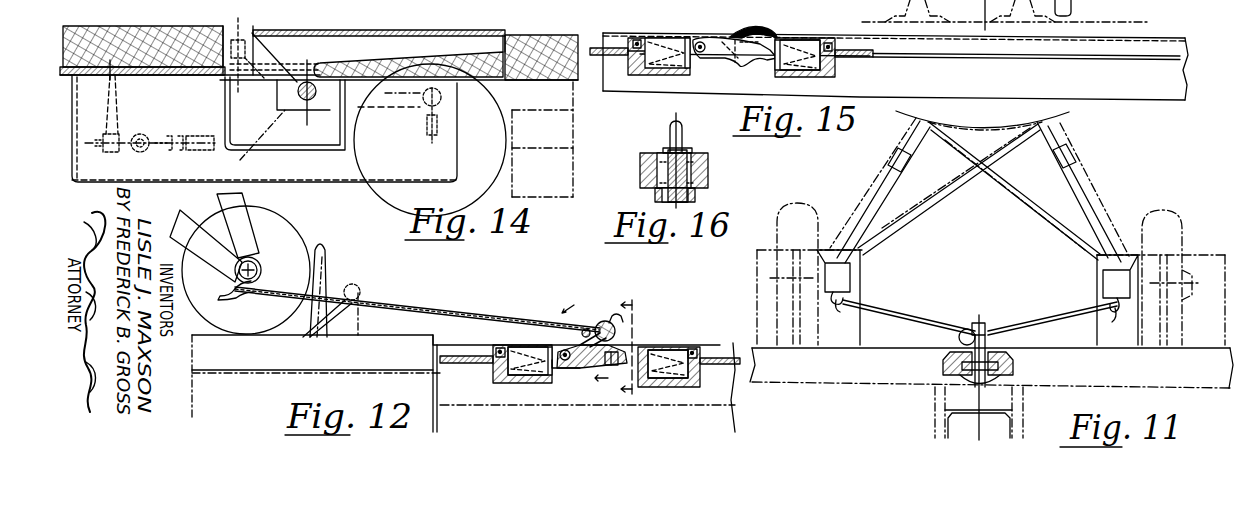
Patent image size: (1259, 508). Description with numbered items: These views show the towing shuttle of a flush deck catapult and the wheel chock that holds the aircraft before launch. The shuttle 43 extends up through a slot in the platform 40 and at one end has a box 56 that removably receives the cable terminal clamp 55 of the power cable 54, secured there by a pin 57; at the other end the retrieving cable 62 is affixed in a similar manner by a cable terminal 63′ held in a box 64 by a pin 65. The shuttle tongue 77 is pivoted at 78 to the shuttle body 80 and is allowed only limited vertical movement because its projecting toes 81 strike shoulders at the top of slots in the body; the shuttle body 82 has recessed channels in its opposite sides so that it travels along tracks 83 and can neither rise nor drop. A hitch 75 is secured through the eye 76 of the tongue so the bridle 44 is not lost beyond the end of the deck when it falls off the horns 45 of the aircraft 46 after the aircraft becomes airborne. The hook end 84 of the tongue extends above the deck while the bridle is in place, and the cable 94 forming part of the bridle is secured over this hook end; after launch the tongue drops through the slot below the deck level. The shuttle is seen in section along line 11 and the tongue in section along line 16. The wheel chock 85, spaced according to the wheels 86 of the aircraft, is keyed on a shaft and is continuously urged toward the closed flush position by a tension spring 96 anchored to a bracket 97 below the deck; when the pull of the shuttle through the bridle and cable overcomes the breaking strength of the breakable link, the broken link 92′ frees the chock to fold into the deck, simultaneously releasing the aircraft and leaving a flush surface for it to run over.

In FIG. 14, the platform 40 is at (138, 33).
In FIG. 14, the broken breakable link 92′ is at (236, 70).
In FIG. 14, the tension spring 96 is at (184, 134).
In FIG. 14, the bracket 97 is at (118, 116).
In FIG. 15, the retrieving cable 62 is at (611, 46).
In FIG. 12, the retrieving cable 62 is at (466, 359).
In FIG. 15, the pin 65 is at (637, 40).
In FIG. 15, the cable terminal 63′ is at (668, 42).
In FIG. 12, the cable terminal 63′ is at (522, 364).
In FIG. 15, the shuttle 43 is at (720, 40).
In FIG. 12, the shuttle 43 is at (678, 336).
In FIG. 15, the hitch 75 is at (755, 28).
In FIG. 12, the hitch 75 is at (603, 321).
In FIG. 15, the bridle 44 is at (808, 38).
In FIG. 12, the bridle 44 is at (378, 305).
In FIG. 11, the bridle 44 is at (916, 320).
In FIG. 15, the pin 57 is at (860, 40).
In FIG. 15, the power cable 54 is at (863, 60).
In FIG. 15, the cable terminal clamp 55 is at (822, 77).
In FIG. 15, the box 56 is at (776, 75).
In FIG. 15, the shuttle tongue 77 is at (725, 53).
In FIG. 12, the shuttle tongue 77 is at (587, 358).
In FIG. 15, the box 64 is at (640, 73).
In FIG. 16, the hook end 84 is at (670, 127).
In FIG. 12, the hook end 84 is at (622, 316).
In FIG. 11, the hook end 84 is at (978, 377).
In FIG. 16, the shuttle body 80 is at (655, 196).
In FIG. 12, the shuttle body 80 is at (630, 352).
In FIG. 11, the shuttle body 80 is at (945, 352).
In FIG. 12, the wheels 86 is at (308, 230).
In FIG. 11, the wheels 86 is at (1170, 215).
In FIG. 12, the wheel chock 85 is at (330, 257).
In FIG. 12, the cable 94 is at (393, 297).
In FIG. 11, the cable 94 is at (988, 322).
In FIG. 12, the horns 45 is at (236, 300).
In FIG. 11, the horns 45 is at (1115, 322).
In FIG. 12, the eye 76 is at (582, 333).
In FIG. 12, the pivot 78 is at (563, 369).
In FIG. 12, the section line 11— 11 is at (628, 350).
In FIG. 12, the section line 16— 16 is at (582, 345).
In FIG. 11, the aircraft 46 is at (1068, 118).
In FIG. 11, the tracks 83 is at (1000, 366).
In FIG. 11, the projecting toes 81 is at (970, 380).
In FIG. 11, the shuttle body 82 is at (988, 380).